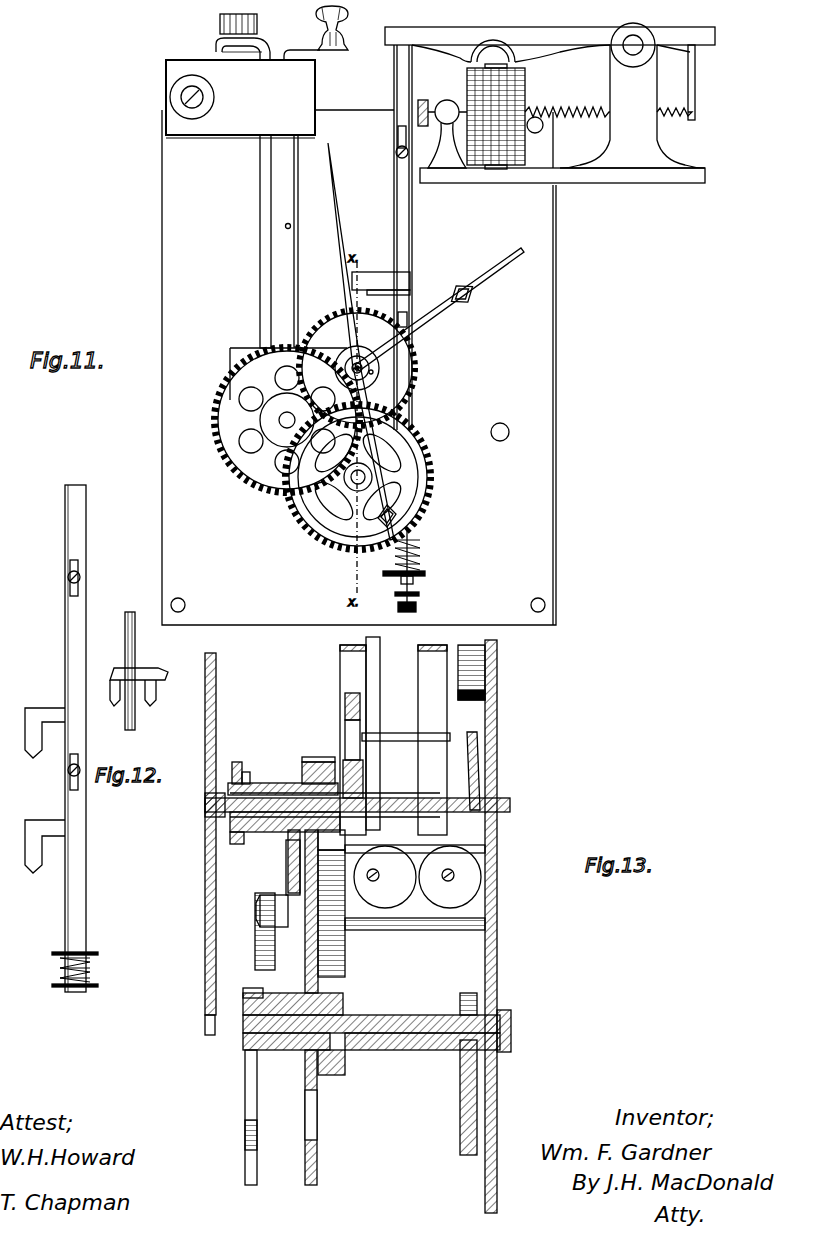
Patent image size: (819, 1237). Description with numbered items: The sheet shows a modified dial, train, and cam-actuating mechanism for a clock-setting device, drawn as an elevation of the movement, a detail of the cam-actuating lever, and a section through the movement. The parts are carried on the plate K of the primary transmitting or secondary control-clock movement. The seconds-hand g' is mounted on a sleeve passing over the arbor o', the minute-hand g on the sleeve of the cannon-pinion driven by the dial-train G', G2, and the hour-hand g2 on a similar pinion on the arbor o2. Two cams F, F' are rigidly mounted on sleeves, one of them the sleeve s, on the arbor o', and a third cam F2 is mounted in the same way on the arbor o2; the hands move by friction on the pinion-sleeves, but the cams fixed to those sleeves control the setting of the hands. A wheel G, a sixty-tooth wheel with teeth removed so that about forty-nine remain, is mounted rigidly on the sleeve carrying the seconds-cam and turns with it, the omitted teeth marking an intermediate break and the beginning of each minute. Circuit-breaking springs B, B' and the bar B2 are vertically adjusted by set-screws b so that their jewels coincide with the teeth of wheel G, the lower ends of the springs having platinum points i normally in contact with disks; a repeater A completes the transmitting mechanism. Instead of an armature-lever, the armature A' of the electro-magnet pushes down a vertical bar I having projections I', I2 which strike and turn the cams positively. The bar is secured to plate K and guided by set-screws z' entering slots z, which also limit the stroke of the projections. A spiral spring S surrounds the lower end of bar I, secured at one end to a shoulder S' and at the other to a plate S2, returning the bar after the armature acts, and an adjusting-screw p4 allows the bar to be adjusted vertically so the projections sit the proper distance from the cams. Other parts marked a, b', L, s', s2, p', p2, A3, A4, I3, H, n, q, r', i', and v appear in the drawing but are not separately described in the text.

In FIG. 11, the plate K is at (371, 367).
In FIG. 11, the box housing a is at (166, 97).
In FIG. 11, the set-screws b is at (243, 30).
In FIG. 11, the binding post knob b' is at (320, 33).
In FIG. 11, the circuit-breaking spring B is at (297, 241).
In FIG. 13, the circuit-breaking spring B is at (434, 740).
In FIG. 13, the circuit-breaking spring B' is at (363, 736).
In FIG. 11, the bar B2 is at (252, 241).
In FIG. 11, the frame strip L is at (415, 237).
In FIG. 11, the slots z is at (392, 142).
In FIG. 12, the slots z is at (84, 675).
In FIG. 12, the set-screws z' is at (71, 671).
In FIG. 11, the wheel G is at (367, 368).
In FIG. 13, the wheel G is at (344, 743).
In FIG. 11, the dial-train wheel G' is at (216, 460).
In FIG. 13, the dial-train wheel G' is at (331, 911).
In FIG. 11, the dial-train wheel G2 is at (439, 522).
In FIG. 13, the dial-train wheel G2 is at (325, 1117).
In FIG. 11, the minute-hand g is at (361, 384).
In FIG. 13, the minute-hand g is at (244, 765).
In FIG. 11, the seconds-hand g' is at (341, 256).
In FIG. 13, the seconds-hand g' is at (196, 844).
In FIG. 11, the hour-hand g2 is at (358, 477).
In FIG. 13, the hour-hand g2 is at (262, 1117).
In FIG. 13, the cam F is at (281, 862).
In FIG. 11, the cam F' is at (439, 309).
In FIG. 13, the cam F' is at (471, 762).
In FIG. 11, the cam F2 is at (379, 453).
In FIG. 13, the cam F2 is at (458, 1128).
In FIG. 11, the sleeve s is at (410, 571).
In FIG. 13, the sleeve s is at (284, 809).
In FIG. 11, the spring stop s' is at (429, 541).
In FIG. 11, the spring plate s2 is at (434, 575).
In FIG. 13, the pin p' is at (316, 801).
In FIG. 13, the pinion p2 is at (278, 943).
In FIG. 11, the adjusting-screw p4 is at (432, 599).
In FIG. 11, the repeater A is at (562, 103).
In FIG. 11, the armature A' is at (550, 44).
In FIG. 11, the coil magnet A3 is at (511, 116).
In FIG. 11, the arc segment A4 is at (493, 51).
In FIG. 12, the vertical bar I is at (75, 738).
In FIG. 12, the projection I' is at (35, 733).
In FIG. 12, the projection I2 is at (36, 846).
In FIG. 12, the cross piece I3 is at (132, 671).
In FIG. 12, the spiral spring S is at (82, 969).
In FIG. 12, the shoulder S' is at (41, 951).
In FIG. 12, the plate S2 is at (41, 984).
In FIG. 13, the cross bar H is at (406, 728).
In FIG. 13, the pinion n is at (471, 672).
In FIG. 13, the arbor o' is at (367, 805).
In FIG. 13, the arbor o2 is at (388, 1031).
In FIG. 13, the collar q is at (318, 760).
In FIG. 13, the bearing r' is at (210, 828).
In FIG. 13, the platinum points i is at (385, 877).
In FIG. 13, the roller i' is at (450, 877).
In FIG. 13, the base plate v is at (360, 1001).